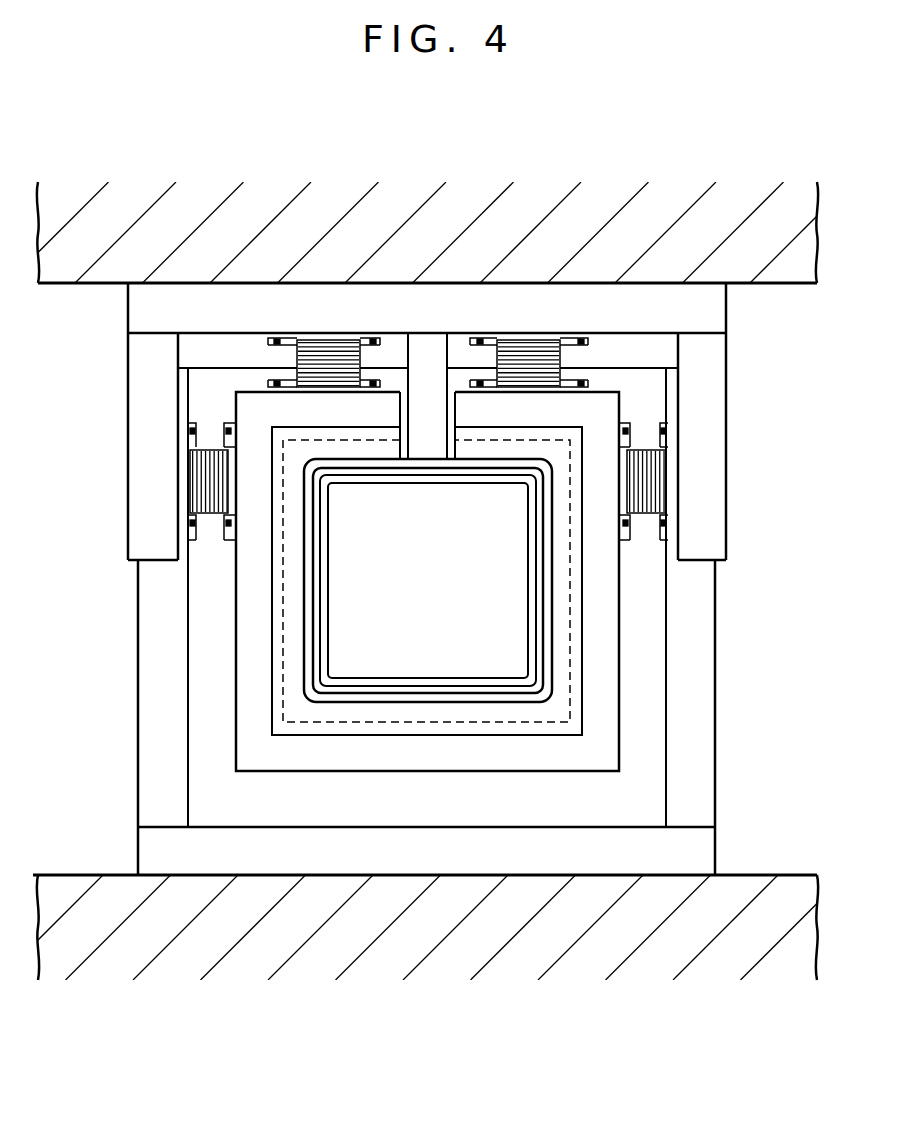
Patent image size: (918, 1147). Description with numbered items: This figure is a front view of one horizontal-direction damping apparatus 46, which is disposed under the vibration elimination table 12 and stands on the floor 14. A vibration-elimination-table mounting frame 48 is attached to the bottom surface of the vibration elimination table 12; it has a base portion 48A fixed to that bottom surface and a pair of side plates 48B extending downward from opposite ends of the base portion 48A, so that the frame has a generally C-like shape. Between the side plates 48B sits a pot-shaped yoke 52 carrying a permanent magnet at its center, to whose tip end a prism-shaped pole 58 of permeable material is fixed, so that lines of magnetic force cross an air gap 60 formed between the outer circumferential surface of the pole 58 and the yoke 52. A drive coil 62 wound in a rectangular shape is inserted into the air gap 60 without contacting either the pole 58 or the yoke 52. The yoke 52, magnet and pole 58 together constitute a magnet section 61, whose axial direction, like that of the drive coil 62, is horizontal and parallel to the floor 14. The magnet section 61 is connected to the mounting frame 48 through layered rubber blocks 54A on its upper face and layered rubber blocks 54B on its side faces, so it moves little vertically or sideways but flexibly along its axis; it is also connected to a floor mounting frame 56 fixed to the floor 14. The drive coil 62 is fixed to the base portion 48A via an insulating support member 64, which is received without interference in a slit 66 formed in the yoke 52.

The vibration elimination table 12 is at (96, 285).
The floor 14 is at (73, 873).
The horizontal-direction damping apparatus 46 is at (728, 594).
The vibration-elimination-table mounting frame 48 is at (730, 307).
The base portion 48A is at (695, 322).
The side plates 48B is at (140, 369).
The pot-shaped yoke 52 is at (412, 772).
The layered rubber blocks 54A is at (294, 360).
The layered rubber blocks 54B is at (205, 517).
The floor mounting frame 56 is at (715, 848).
The pole 58 is at (388, 647).
The air gap 60 is at (545, 697).
The magnet section 61 is at (623, 632).
The drive coil 62 is at (478, 692).
The support member 64 is at (407, 355).
The slit 66 is at (403, 413).